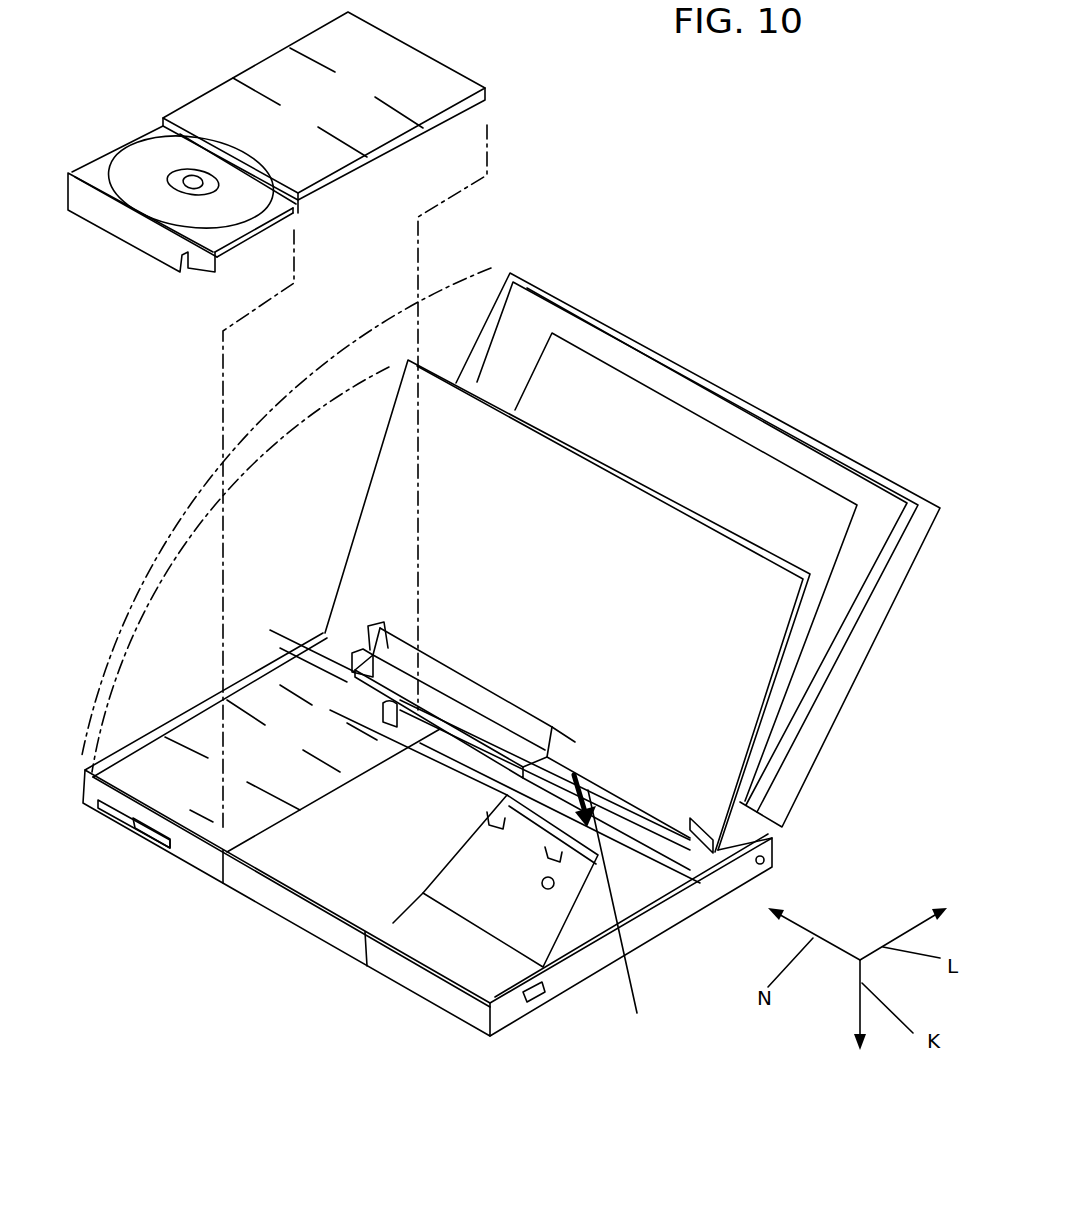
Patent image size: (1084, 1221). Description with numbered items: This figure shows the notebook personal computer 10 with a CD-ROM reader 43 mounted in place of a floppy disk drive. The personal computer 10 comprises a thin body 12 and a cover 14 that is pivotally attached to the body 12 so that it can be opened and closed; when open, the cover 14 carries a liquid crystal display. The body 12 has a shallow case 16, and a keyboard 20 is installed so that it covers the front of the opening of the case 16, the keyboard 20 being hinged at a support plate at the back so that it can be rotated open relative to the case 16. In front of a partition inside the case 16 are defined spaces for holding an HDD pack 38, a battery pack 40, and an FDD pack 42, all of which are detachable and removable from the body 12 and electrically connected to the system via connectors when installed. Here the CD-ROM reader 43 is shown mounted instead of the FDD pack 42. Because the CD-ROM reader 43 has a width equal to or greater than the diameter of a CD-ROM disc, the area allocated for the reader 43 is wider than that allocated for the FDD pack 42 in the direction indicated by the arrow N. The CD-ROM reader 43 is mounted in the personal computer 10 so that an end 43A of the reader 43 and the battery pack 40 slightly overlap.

The personal computer 10 is at (504, 643).
The body 12 is at (420, 824).
The cover 14 is at (860, 726).
The case 16 is at (213, 863).
The keyboard 20 is at (383, 540).
The HDD pack 38 is at (472, 948).
The battery pack 40 is at (282, 892).
The FDD pack 42 is at (158, 758).
The CD-ROM reader 43 is at (341, 139).
The end of the CD-ROM reader 43A is at (377, 137).